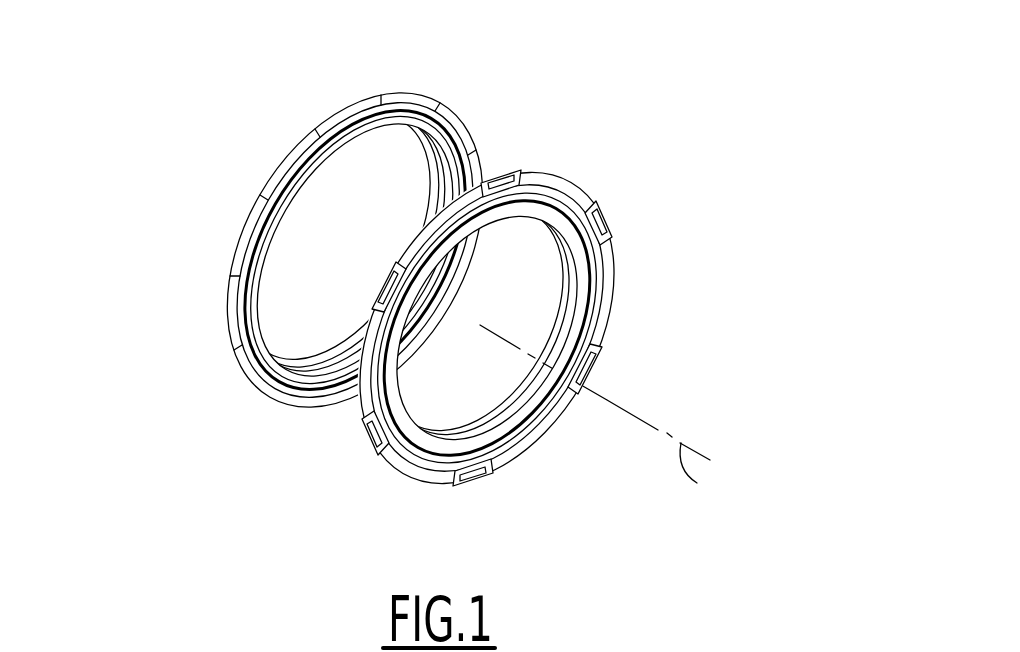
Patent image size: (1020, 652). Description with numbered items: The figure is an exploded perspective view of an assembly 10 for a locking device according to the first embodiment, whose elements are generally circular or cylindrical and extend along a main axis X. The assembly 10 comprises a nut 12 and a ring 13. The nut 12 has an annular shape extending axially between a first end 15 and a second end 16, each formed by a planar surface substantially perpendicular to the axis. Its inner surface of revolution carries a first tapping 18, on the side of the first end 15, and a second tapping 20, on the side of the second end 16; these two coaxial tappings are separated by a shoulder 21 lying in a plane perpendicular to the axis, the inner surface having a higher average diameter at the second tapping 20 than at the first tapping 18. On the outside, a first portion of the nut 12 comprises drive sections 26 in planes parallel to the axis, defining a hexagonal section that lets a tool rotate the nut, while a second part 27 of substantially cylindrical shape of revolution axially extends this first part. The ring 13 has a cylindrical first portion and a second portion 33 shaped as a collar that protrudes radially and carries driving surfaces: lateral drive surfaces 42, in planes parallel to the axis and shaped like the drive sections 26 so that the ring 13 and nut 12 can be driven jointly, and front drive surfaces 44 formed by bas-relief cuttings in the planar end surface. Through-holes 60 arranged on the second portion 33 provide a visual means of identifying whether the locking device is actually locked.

The assembly 10 is at (477, 289).
The nut 12 is at (192, 132).
The ring 13 is at (672, 352).
The first end 15 is at (303, 140).
The second end 16 is at (473, 157).
The first tapping 18 is at (342, 350).
The second tapping 20 is at (350, 378).
The shoulder 21 is at (305, 375).
The drive sections 26 is at (233, 315).
The second part of the outer surface 27 is at (273, 227).
The second portion 33 is at (613, 280).
The lateral drive surfaces 42 is at (380, 440).
The front drive surfaces 44 is at (398, 430).
The through-holes 60 is at (463, 477).